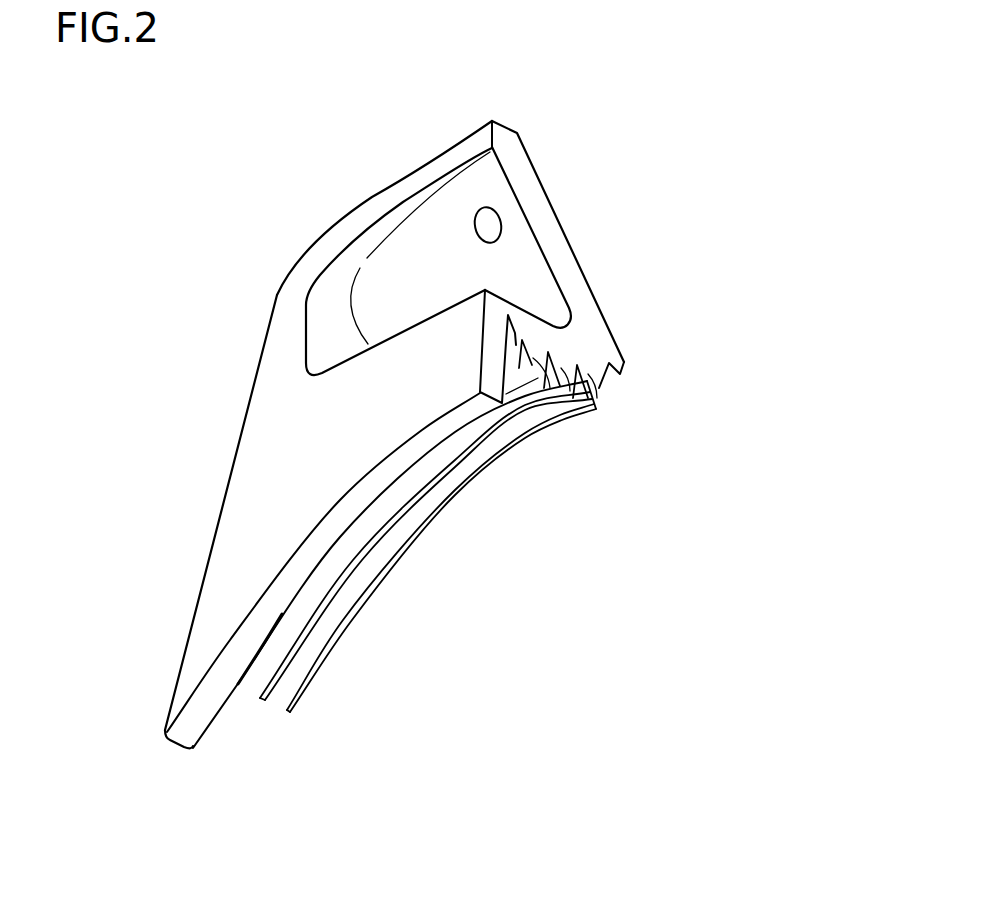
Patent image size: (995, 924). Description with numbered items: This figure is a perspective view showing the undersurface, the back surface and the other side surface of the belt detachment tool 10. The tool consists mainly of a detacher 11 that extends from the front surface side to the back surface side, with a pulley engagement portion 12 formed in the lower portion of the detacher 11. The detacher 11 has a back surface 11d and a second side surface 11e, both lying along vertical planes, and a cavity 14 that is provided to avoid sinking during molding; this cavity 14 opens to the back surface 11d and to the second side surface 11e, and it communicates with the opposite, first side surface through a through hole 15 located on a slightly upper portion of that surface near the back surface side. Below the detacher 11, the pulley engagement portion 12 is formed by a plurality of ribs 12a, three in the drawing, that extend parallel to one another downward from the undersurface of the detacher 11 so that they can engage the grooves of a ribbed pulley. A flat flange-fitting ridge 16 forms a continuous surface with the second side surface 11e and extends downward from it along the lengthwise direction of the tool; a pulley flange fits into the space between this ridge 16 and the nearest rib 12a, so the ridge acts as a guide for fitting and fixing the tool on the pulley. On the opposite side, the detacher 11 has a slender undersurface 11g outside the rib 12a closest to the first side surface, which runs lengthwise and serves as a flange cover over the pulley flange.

The belt detachment tool 10 is at (579, 136).
The detacher 11 is at (240, 422).
The back surface 11d is at (592, 335).
The second side surface 11e is at (247, 460).
The undersurface 11g is at (610, 381).
The pulley engagement portion 12 is at (422, 538).
The ribs 12a is at (547, 365).
The cavity 14 is at (518, 285).
The through hole 15 is at (488, 225).
The flange-fitting ridge 16 is at (208, 630).